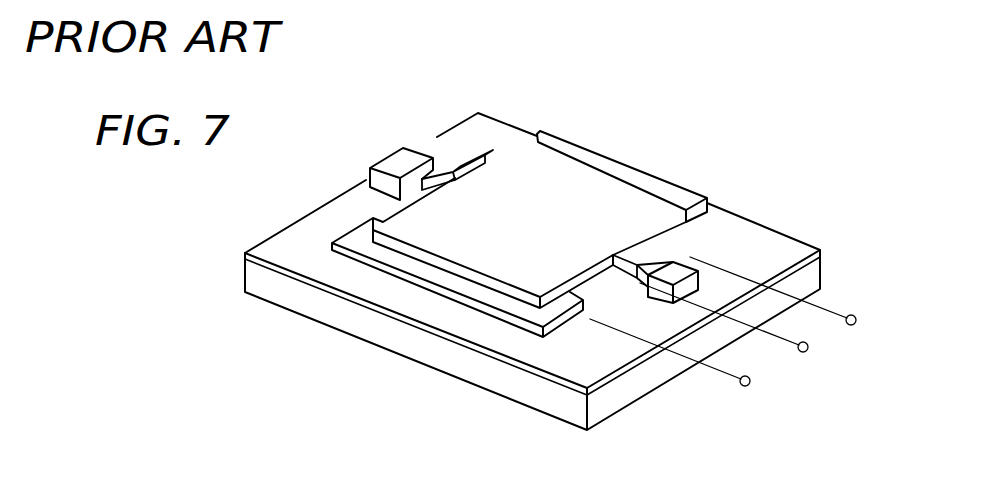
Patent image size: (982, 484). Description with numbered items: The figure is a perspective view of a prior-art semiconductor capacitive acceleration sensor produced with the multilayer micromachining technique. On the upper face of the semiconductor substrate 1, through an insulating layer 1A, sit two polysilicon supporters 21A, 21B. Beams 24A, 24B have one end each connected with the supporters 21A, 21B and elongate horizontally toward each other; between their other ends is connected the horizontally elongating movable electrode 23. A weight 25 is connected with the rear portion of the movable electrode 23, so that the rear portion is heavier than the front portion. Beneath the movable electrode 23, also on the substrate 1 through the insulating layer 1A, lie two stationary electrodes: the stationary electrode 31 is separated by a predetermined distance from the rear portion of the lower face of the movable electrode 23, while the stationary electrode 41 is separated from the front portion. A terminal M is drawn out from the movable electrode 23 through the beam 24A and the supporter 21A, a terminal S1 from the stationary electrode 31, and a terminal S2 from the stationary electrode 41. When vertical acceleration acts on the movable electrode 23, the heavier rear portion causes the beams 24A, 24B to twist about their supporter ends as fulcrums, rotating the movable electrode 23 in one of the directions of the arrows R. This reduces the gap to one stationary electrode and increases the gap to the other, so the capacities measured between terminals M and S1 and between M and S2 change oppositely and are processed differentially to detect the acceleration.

The semiconductor substrate 1 is at (813, 283).
The insulating layer 1A is at (813, 260).
The supporter 21A is at (685, 268).
The supporter 21B is at (398, 168).
The movable electrode 23 is at (510, 260).
The beam 24A is at (623, 262).
The beam 24B is at (447, 170).
The weight 25 is at (622, 165).
The stationary electrode 31 is at (692, 229).
The stationary electrode 41 is at (426, 283).
The terminal S1 is at (790, 299).
The terminal S2 is at (684, 366).
The terminal M is at (737, 330).
The arrows R is at (614, 82).